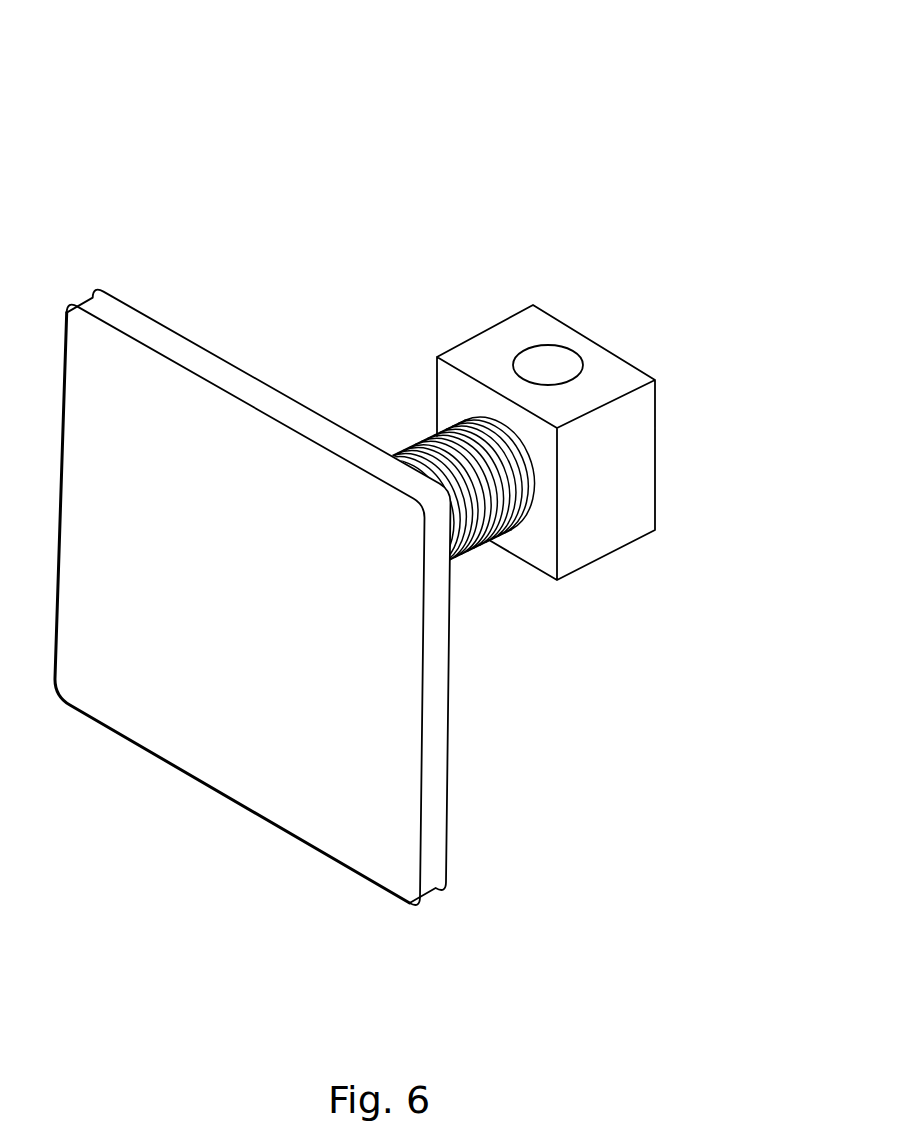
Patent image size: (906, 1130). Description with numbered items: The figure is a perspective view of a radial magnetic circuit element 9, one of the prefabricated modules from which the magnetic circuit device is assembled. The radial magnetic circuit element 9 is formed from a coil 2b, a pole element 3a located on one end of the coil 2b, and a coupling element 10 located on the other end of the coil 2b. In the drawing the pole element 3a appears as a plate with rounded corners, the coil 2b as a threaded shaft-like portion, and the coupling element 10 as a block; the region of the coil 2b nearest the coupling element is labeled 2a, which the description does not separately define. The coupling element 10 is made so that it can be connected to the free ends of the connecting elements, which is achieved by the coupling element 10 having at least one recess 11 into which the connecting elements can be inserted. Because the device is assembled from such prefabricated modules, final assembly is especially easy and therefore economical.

The radial magnetic circuit element 9 is at (245, 182).
The pole element 3a is at (207, 747).
The threaded shaft 2a is at (490, 540).
The coil 2b is at (412, 445).
The coupling element 10 is at (628, 443).
The recess 11 is at (555, 332).